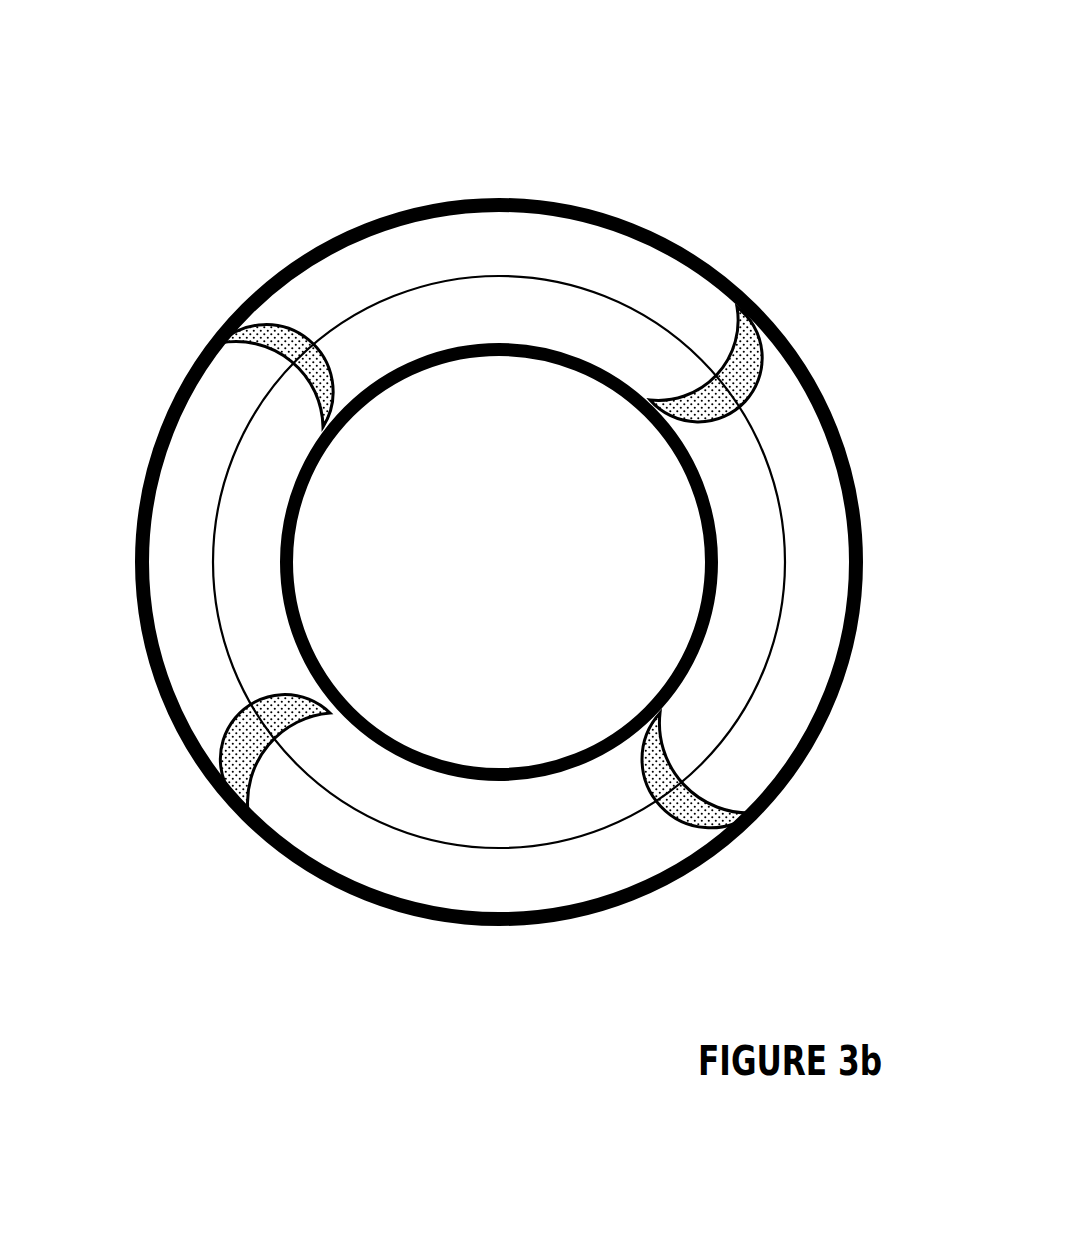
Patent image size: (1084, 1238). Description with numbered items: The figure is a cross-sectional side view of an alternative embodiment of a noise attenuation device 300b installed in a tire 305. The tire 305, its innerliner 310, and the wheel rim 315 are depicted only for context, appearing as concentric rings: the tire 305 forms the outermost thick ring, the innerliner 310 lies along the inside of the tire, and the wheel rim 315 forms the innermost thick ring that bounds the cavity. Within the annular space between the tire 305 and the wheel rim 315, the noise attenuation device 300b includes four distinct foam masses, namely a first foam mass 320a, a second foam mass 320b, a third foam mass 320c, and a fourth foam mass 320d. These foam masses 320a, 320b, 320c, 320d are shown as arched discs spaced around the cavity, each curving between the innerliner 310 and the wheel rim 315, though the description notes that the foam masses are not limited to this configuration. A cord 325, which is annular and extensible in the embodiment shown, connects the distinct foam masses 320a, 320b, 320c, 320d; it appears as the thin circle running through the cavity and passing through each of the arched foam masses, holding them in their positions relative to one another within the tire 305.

The noise attenuation device 300b is at (375, 150).
The tire 305 is at (658, 232).
The innerliner 310 is at (570, 217).
The wheel rim 315 is at (588, 377).
The first foam mass 320a is at (267, 345).
The second foam mass 320b is at (240, 768).
The third foam mass 320c is at (745, 822).
The fourth foam mass 320d is at (753, 333).
The cord 325 is at (210, 567).